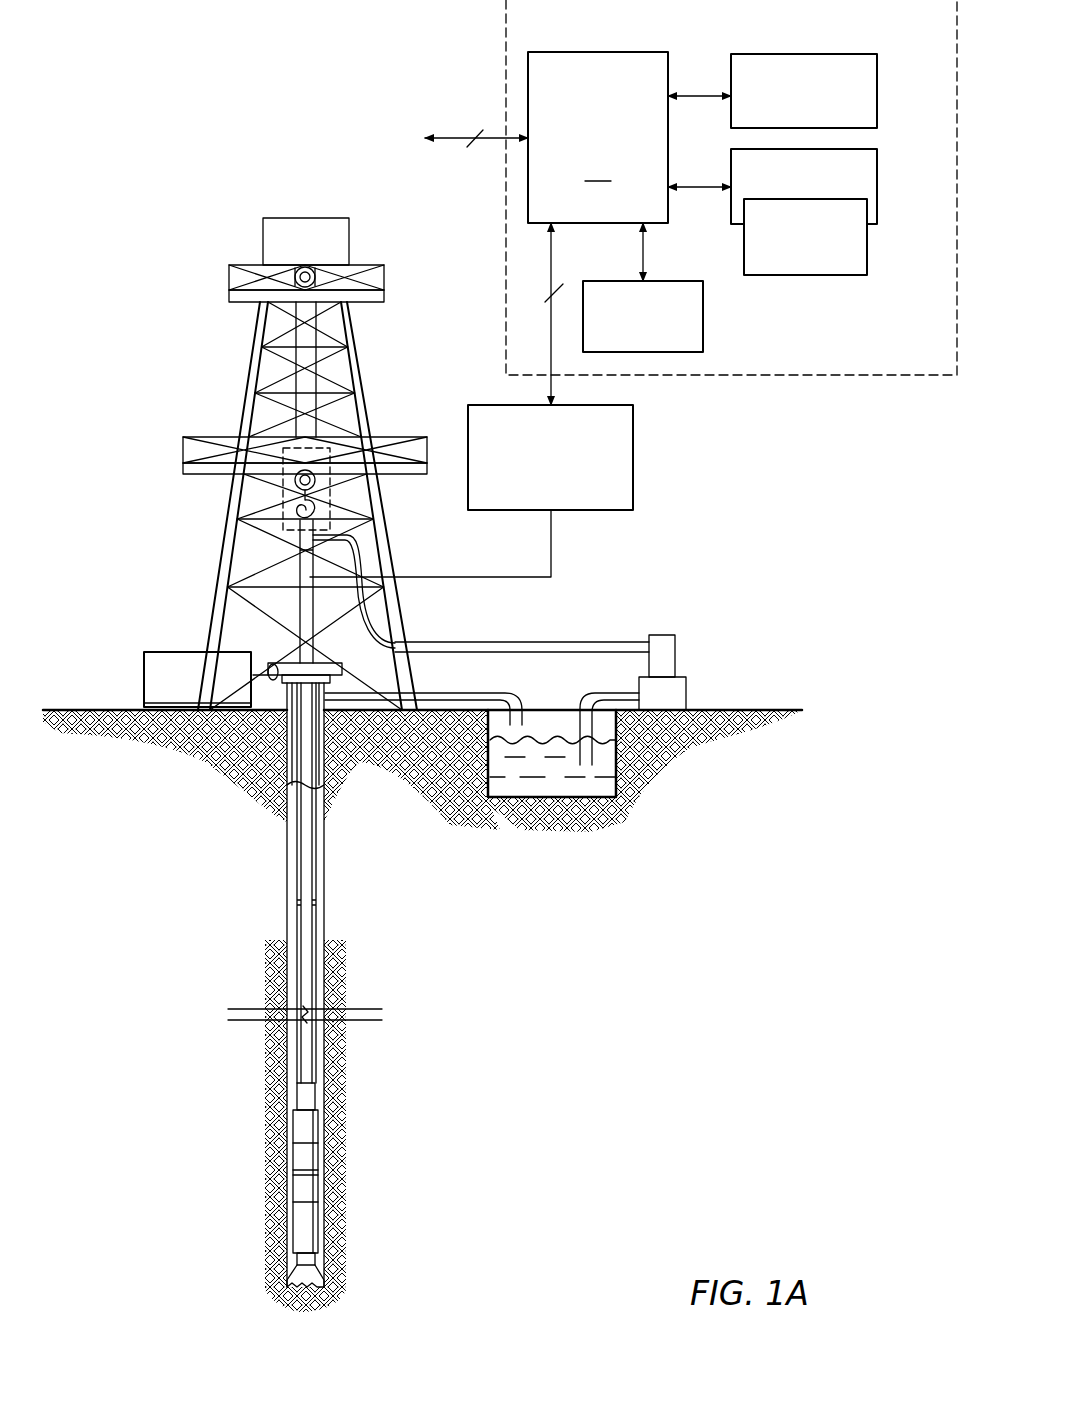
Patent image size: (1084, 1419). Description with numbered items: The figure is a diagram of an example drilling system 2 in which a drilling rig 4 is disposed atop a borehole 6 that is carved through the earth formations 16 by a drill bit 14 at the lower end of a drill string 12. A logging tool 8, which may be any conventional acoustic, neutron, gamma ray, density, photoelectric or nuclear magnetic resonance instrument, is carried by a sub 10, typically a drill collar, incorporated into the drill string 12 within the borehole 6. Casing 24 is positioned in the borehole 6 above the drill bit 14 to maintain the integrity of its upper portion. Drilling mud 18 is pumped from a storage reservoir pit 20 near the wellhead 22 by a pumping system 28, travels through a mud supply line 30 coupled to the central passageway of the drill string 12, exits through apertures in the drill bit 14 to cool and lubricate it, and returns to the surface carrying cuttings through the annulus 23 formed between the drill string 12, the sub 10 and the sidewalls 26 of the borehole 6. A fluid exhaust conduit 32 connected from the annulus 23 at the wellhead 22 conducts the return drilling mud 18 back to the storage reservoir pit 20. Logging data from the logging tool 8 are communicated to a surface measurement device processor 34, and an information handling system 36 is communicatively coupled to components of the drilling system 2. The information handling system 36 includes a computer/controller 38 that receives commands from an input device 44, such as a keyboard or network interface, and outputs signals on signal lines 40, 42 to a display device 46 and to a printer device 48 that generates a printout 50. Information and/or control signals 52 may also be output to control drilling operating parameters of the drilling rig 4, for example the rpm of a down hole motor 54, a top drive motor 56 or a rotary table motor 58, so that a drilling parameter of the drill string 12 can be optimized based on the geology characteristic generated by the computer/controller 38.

The drilling system 2 is at (172, 122).
The drilling rig 4 is at (190, 350).
The borehole 6 is at (324, 918).
The logging tool 8 is at (316, 1124).
The sub 10 is at (302, 1232).
The drill string 12 is at (298, 1052).
The drill bit 14 is at (313, 1296).
The earth formations 16 is at (337, 1285).
The drilling mud 18 is at (292, 956).
The storage reservoir pit 20 is at (532, 800).
The wellhead 22 is at (462, 673).
The annulus 23 is at (292, 1125).
The casing 24 is at (297, 768).
The sidewalls 26 is at (324, 966).
The pumping system 28 is at (676, 655).
The mud supply line 30 is at (622, 642).
The fluid exhaust conduit 32 is at (521, 693).
The surface measurement device processor 34 is at (633, 441).
The information handling system 36 is at (830, 375).
The computer/controller 38 is at (598, 137).
The signal lines 40 is at (696, 96).
The signal lines 42 is at (703, 188).
The input device 44 is at (703, 303).
The display device 46 is at (877, 70).
The printer device 48 is at (877, 176).
The printout 50 is at (867, 248).
The information and/or control signals 52 is at (452, 138).
The down hole motor 54 is at (313, 1185).
The top drive motor 56 is at (287, 493).
The rotary table motor 58 is at (143, 672).